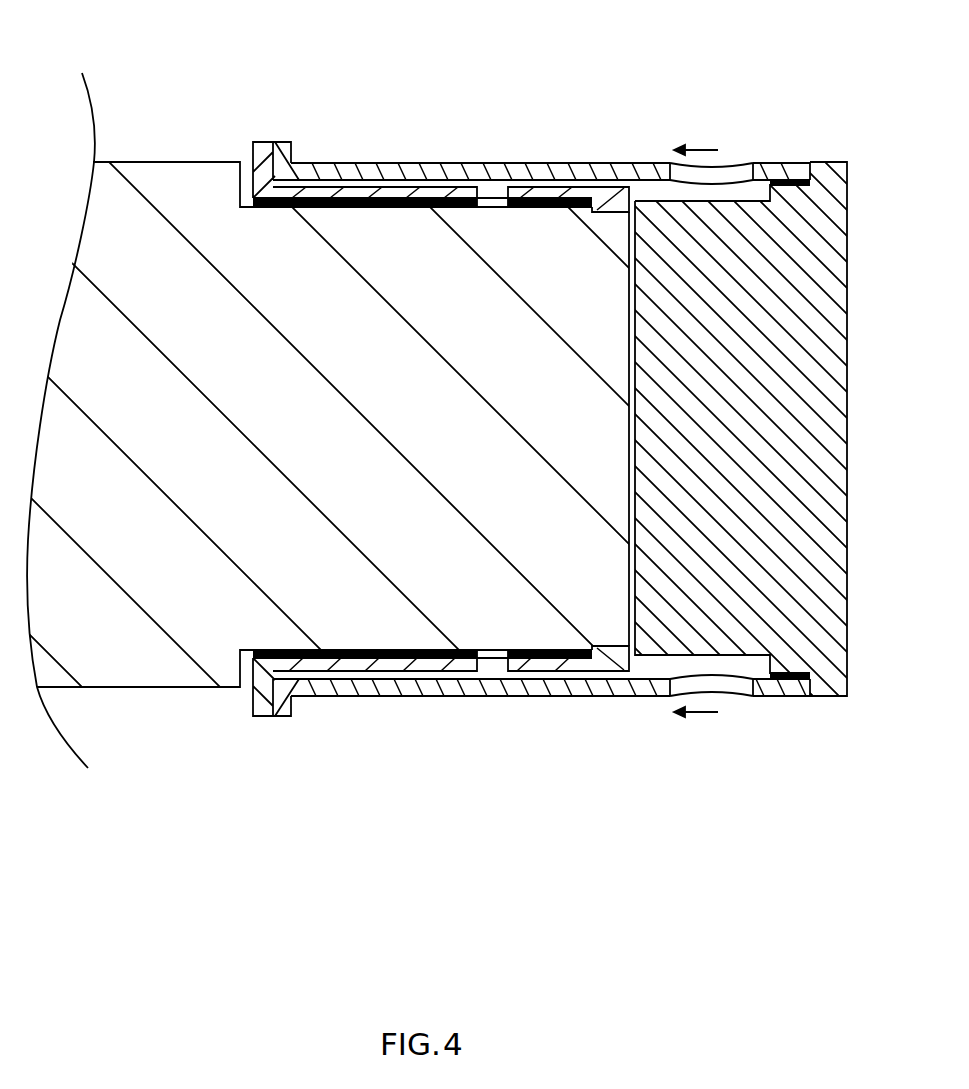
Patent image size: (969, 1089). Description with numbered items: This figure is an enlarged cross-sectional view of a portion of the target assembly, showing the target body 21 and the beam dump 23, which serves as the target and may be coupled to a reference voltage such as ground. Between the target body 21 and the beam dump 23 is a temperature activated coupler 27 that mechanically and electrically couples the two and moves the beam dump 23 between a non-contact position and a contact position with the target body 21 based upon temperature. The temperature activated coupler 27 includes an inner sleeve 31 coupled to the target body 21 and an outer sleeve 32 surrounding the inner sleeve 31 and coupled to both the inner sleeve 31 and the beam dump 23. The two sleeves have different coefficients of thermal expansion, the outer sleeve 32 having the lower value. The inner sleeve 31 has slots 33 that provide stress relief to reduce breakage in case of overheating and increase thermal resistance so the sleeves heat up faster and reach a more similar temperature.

The target body 21 is at (198, 162).
The beam dump 23 is at (826, 705).
The temperature activated coupler 27 is at (445, 710).
The inner sleeve 31 is at (262, 142).
The outer sleeve 32 is at (453, 170).
The slots 33 is at (492, 194).